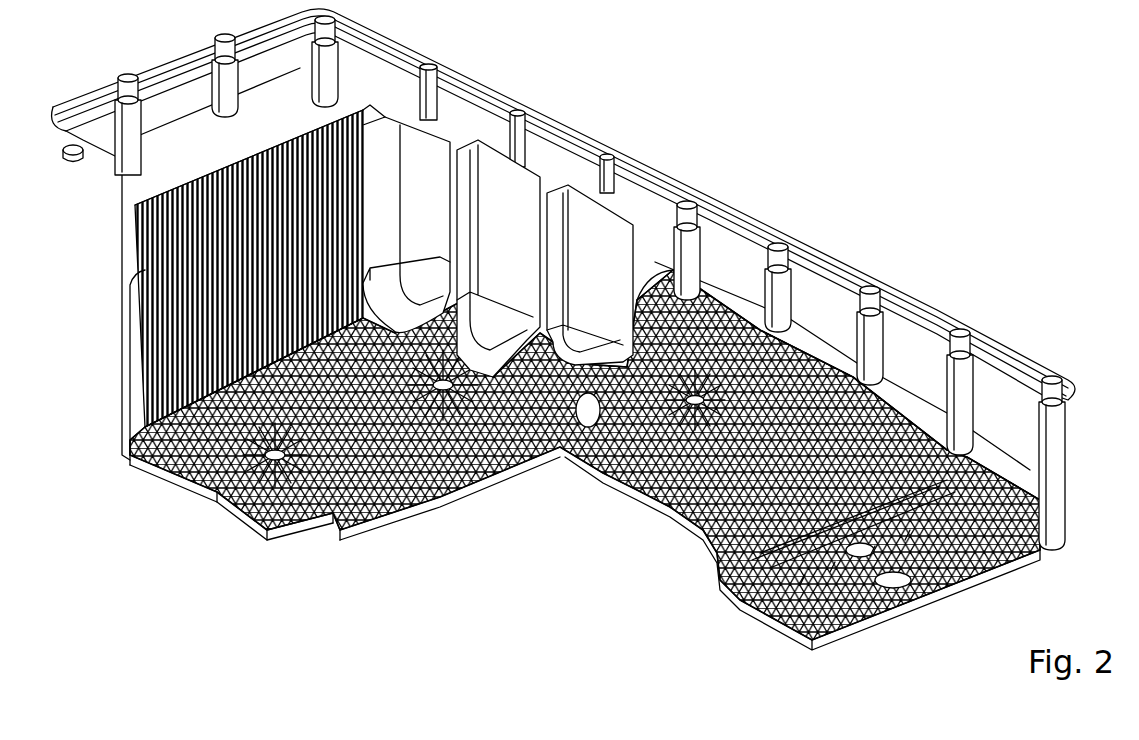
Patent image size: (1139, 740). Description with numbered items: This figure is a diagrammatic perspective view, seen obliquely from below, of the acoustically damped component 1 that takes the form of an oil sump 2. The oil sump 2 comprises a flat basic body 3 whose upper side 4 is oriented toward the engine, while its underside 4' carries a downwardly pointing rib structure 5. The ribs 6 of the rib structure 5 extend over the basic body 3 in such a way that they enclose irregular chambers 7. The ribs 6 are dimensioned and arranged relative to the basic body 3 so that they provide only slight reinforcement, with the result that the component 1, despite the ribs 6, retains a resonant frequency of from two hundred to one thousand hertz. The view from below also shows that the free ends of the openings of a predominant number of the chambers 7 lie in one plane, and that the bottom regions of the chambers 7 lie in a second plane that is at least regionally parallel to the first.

The acoustically damped component 1 is at (791, 158).
The oil sump 2 is at (894, 182).
The flat basic body 3 is at (254, 540).
The upper side 4 is at (383, 238).
The underside 4' is at (712, 561).
The rib structure 5 is at (218, 522).
The rib 6 is at (339, 497).
The chamber 7 is at (549, 441).